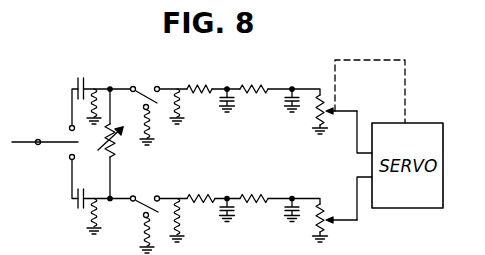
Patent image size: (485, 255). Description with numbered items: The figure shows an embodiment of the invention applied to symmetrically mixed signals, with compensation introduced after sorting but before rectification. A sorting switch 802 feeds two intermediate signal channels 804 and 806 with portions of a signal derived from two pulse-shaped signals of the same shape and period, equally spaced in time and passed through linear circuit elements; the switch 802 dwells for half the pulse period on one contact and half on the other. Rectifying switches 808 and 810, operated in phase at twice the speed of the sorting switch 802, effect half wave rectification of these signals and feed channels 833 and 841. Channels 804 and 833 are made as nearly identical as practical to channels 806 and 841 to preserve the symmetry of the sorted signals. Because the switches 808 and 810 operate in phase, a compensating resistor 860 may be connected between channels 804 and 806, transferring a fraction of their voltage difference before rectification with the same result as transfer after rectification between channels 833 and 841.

The sorting switch 802 is at (40, 144).
The intermediate signal channel 804 is at (91, 101).
The intermediate signal channel 806 is at (90, 222).
The rectifying switch 808 is at (135, 87).
The rectifying switch 810 is at (135, 196).
The channel 833 is at (181, 108).
The channel 841 is at (181, 219).
The compensating resistor 860 is at (115, 149).